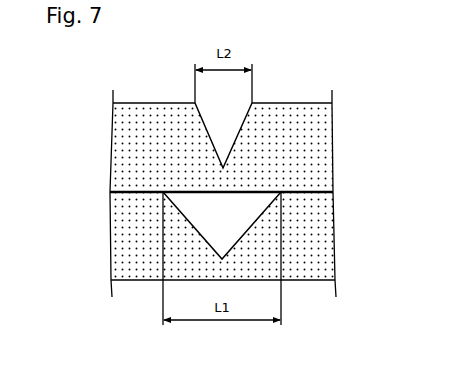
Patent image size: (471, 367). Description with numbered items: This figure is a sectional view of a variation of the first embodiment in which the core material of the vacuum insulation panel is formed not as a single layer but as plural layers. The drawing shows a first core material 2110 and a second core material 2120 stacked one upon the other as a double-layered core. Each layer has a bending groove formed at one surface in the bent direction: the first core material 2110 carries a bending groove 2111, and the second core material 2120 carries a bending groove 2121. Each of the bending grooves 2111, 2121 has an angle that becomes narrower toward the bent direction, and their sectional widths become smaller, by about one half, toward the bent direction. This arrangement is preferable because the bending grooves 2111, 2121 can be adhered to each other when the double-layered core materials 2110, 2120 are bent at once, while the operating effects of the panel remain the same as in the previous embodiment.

The second core material 2120 is at (320, 152).
The bending groove 2121 is at (212, 139).
The first core material 2110 is at (322, 238).
The bending groove 2111 is at (212, 228).